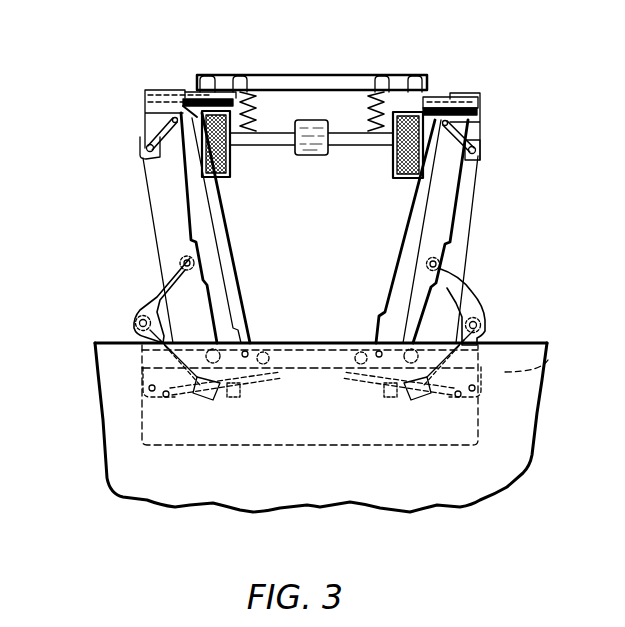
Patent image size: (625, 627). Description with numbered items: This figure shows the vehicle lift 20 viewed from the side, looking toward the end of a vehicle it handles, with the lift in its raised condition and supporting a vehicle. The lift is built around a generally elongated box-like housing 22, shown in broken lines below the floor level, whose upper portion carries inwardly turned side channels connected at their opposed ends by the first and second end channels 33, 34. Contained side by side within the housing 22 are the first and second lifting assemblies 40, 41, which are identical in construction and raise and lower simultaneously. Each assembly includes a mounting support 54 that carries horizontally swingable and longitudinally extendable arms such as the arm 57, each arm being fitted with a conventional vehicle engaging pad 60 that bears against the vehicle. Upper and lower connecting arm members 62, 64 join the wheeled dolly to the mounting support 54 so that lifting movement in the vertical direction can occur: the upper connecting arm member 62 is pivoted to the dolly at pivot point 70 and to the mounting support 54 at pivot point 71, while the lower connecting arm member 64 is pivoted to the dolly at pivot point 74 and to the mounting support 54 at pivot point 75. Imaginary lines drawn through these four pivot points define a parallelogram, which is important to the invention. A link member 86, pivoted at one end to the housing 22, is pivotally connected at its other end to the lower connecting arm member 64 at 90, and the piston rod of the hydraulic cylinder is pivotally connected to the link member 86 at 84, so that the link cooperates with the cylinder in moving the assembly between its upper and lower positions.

The vehicle lift 20 is at (78, 316).
The housing 22 is at (142, 424).
The first end channel 33 is at (142, 367).
The second end channel 34 is at (548, 360).
The first lifting assembly 40 is at (140, 232).
The second lifting assembly 41 is at (478, 250).
The mounting support 54 is at (156, 110).
The second arm 57 is at (193, 93).
The vehicle engaging pad 60 is at (224, 92).
The upper connecting arm member 62 is at (221, 233).
The lower connecting arm member 64 is at (183, 245).
The pivot point 70 is at (258, 350).
The pivot point 71 is at (173, 122).
The pivot point 74 is at (232, 385).
The pivot point 75 is at (150, 148).
The pivot connection 84 is at (480, 324).
The link member 86 is at (150, 298).
The pivot connection 90 is at (184, 263).